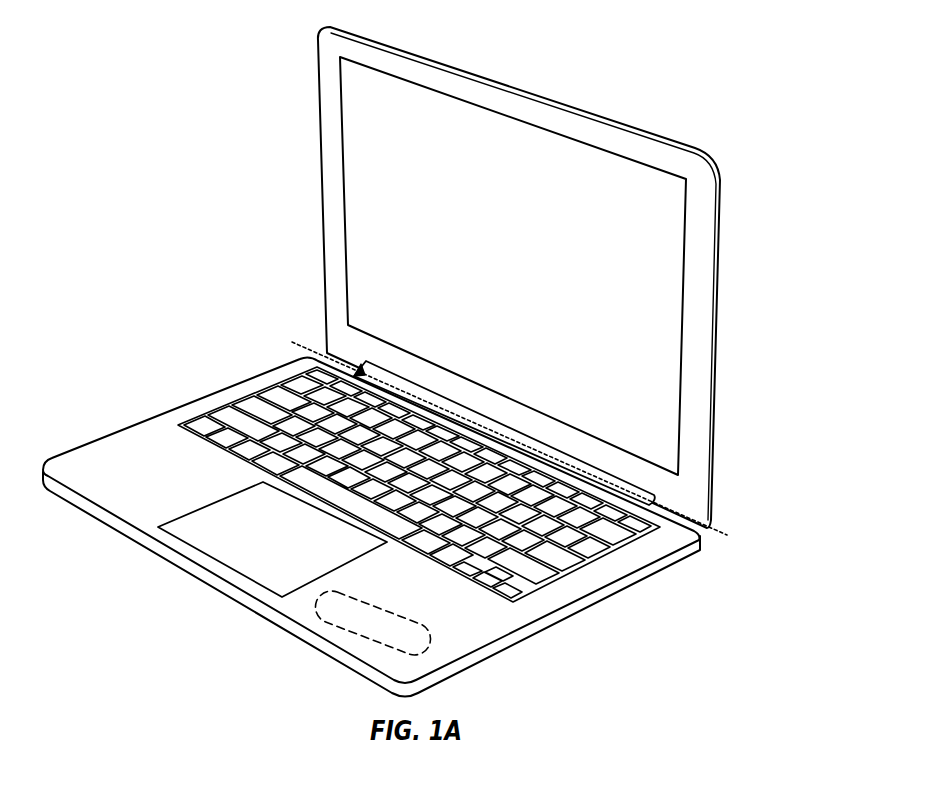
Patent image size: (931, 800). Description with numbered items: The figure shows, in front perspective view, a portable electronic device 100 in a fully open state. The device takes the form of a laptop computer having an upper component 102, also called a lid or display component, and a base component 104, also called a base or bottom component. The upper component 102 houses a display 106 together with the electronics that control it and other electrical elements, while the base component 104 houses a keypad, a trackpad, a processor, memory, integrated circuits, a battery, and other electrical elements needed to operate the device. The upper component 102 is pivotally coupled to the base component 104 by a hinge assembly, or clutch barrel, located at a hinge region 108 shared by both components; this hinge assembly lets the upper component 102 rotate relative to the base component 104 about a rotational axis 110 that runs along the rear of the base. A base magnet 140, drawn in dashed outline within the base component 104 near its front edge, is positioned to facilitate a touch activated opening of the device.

The portable electronic device 100 is at (429, 353).
The upper component 102 is at (566, 277).
The base component 104 is at (371, 527).
The display 106 is at (550, 260).
The hinge region 108 is at (723, 524).
The rotational axis 110 is at (292, 342).
The base magnet 140 is at (430, 650).